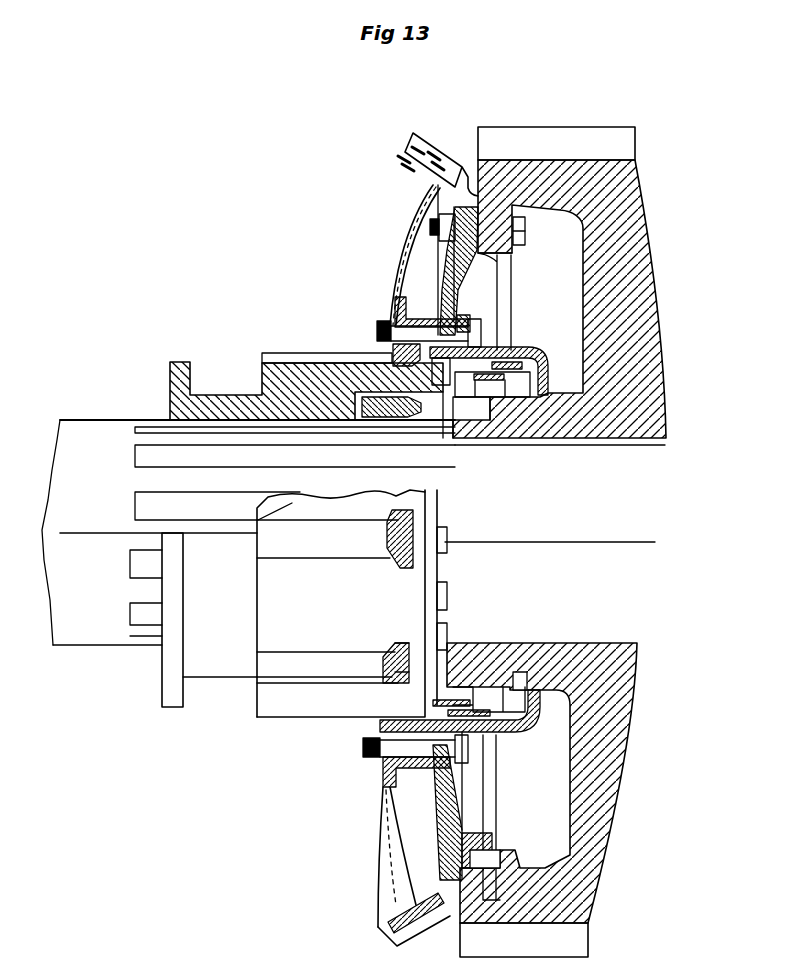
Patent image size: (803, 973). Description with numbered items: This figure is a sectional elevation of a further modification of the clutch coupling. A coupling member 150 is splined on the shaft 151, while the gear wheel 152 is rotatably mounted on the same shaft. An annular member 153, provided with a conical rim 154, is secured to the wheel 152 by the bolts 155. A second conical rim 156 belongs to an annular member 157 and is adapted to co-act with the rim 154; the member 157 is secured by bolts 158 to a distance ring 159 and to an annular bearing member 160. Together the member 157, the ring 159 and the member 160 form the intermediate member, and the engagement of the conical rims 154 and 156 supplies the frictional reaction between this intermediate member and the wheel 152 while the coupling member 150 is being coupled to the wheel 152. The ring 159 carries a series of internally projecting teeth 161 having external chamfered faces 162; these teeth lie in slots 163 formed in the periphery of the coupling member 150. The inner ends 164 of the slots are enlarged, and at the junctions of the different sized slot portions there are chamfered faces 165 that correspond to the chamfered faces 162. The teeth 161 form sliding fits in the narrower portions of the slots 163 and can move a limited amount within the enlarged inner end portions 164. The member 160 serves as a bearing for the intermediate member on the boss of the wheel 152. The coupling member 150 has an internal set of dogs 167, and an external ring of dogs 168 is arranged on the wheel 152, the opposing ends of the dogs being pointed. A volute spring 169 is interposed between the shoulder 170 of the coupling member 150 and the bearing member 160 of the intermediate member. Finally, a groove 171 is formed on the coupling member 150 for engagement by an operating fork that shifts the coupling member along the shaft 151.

The coupling member 150 is at (288, 386).
The shaft 151 is at (248, 532).
The gear wheel 152 is at (622, 422).
The annular member 153 is at (498, 268).
The conical rim 154 is at (437, 160).
The bolts 155 is at (525, 241).
The conical rim 156 is at (400, 158).
The annular member 157 is at (402, 212).
The bolts 158 is at (381, 331).
The distance ring 159 is at (396, 300).
The annular bearing member 160 is at (498, 349).
The teeth 161 is at (385, 358).
The chamfered faces 162 is at (387, 555).
The slots 163 is at (286, 665).
The inner ends of the slots 164 is at (401, 668).
The chamfered faces 165 is at (402, 672).
The internal set of dogs 167 is at (396, 410).
The external ring of dogs 168 is at (496, 402).
The volute spring 169 is at (536, 357).
The shoulder 170 is at (461, 333).
The groove 171 is at (196, 623).